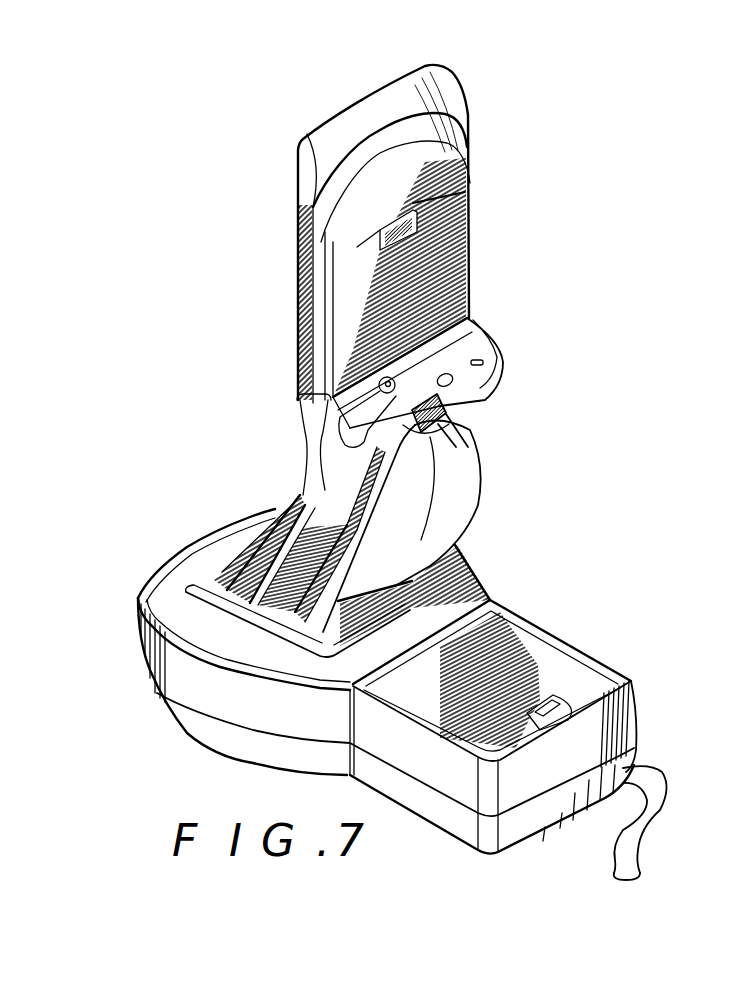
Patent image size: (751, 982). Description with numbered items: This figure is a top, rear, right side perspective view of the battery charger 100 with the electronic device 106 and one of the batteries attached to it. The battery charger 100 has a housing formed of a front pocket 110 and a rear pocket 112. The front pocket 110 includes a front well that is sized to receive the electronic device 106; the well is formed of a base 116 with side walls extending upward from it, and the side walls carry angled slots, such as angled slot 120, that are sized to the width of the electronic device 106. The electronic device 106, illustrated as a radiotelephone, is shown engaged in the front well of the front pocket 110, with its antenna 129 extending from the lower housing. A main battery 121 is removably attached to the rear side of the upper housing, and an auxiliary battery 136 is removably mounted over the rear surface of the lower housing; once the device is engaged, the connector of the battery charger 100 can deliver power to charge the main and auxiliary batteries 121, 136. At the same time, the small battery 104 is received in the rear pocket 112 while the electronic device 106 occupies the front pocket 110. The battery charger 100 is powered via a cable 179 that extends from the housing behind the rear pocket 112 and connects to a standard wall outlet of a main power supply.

The battery charger 100 is at (200, 765).
The small battery 104 is at (543, 650).
The electronic device 106 is at (258, 255).
The front pocket 110 is at (118, 628).
The rear pocket 112 is at (539, 715).
The base 116 is at (420, 577).
The angled slot 120 is at (214, 578).
The main battery 121 is at (457, 273).
The antenna 129 is at (353, 414).
The auxiliary battery 136 is at (450, 467).
The cable 179 is at (627, 838).